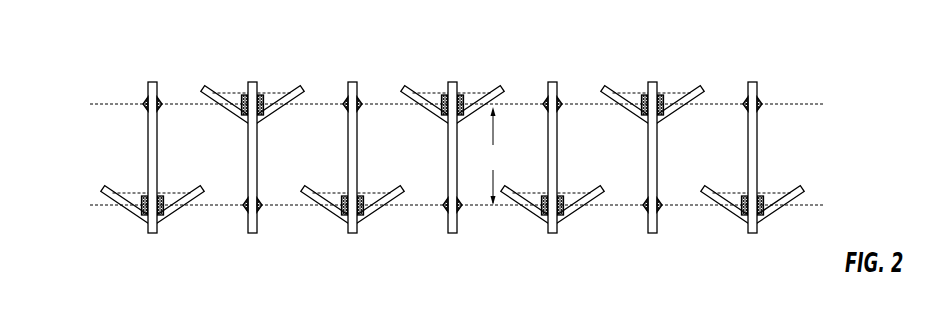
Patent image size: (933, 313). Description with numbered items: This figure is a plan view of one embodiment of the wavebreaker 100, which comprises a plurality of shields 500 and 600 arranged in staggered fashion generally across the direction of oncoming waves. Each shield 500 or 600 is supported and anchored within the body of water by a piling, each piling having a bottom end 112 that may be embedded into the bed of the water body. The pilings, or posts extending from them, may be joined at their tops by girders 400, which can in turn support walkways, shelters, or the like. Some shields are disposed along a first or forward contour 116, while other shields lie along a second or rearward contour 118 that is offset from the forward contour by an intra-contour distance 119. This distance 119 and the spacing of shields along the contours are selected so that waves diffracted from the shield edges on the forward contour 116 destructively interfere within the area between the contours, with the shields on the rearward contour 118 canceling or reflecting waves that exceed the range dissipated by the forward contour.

The wavebreaker 100 is at (474, 122).
The bottom end 112 is at (146, 111).
The first or forward contour 116 is at (474, 208).
The second or rearward contour 118 is at (474, 108).
The intra-contour distance 119 is at (494, 156).
The girder 400 is at (758, 158).
The shield 500 is at (268, 93).
The shield 600 is at (160, 197).